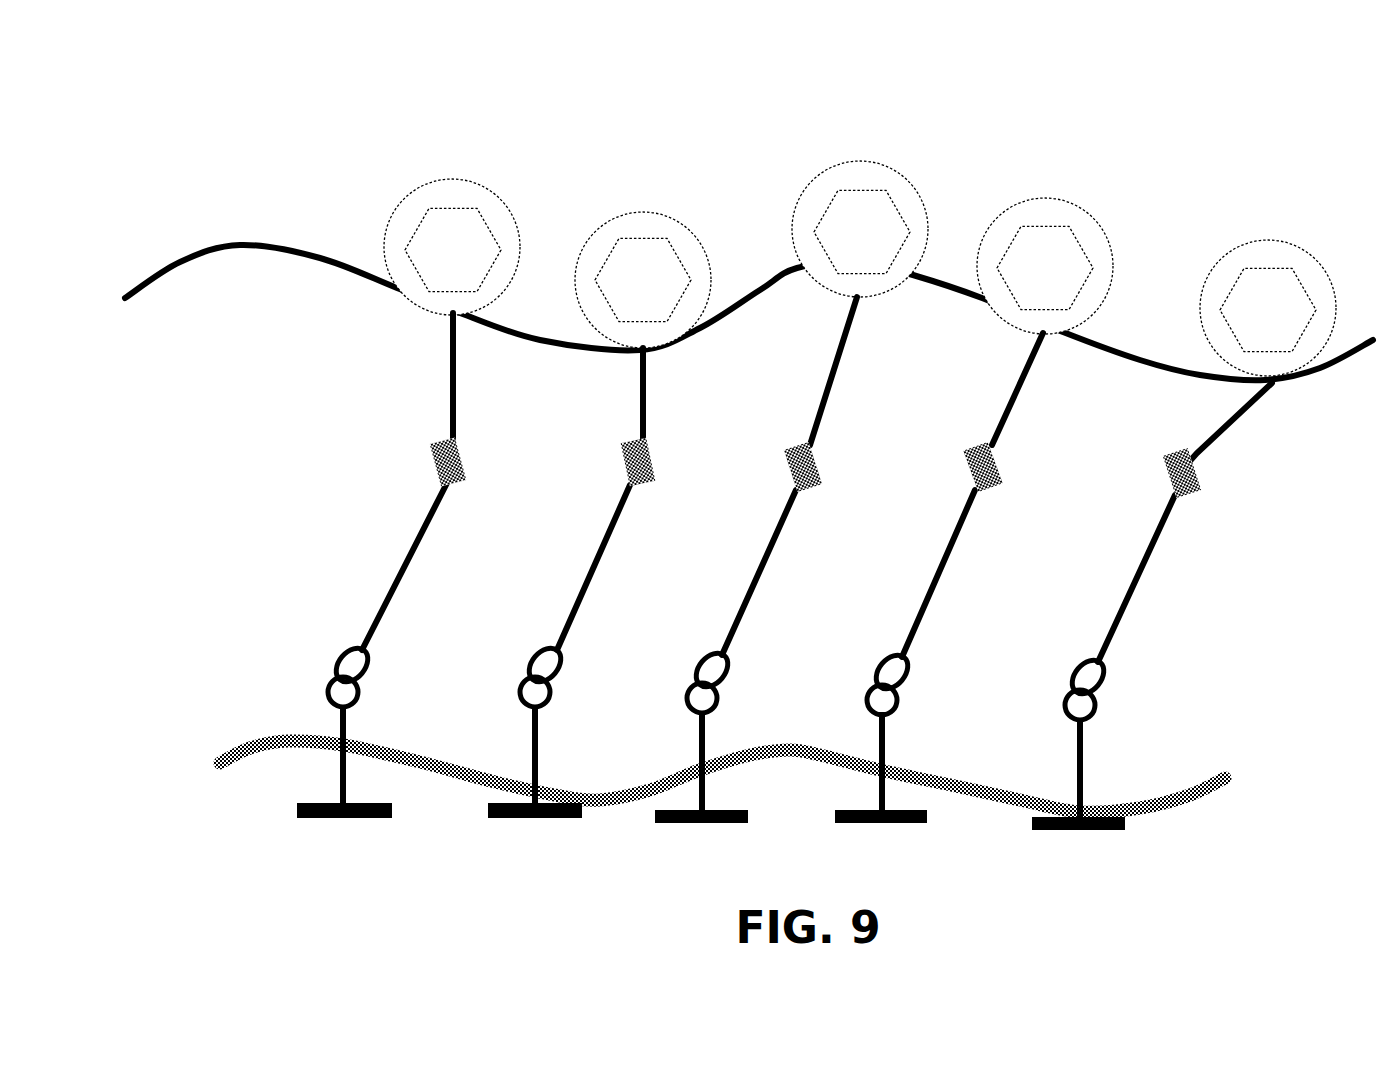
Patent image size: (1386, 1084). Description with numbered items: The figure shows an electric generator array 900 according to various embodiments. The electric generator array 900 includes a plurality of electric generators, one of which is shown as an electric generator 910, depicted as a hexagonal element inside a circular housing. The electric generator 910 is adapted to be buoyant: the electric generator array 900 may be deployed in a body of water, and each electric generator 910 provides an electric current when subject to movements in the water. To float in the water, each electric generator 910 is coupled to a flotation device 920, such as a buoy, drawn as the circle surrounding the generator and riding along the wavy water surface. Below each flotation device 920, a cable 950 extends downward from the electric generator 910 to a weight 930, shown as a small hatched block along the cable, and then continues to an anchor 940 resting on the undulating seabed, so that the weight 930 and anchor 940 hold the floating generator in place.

The electric generator array 900 is at (1299, 84).
The electric generator 910 is at (502, 250).
The flotation device 920 is at (453, 180).
The weight 930 is at (437, 458).
The anchor 940 is at (340, 758).
The cable 950 is at (397, 568).